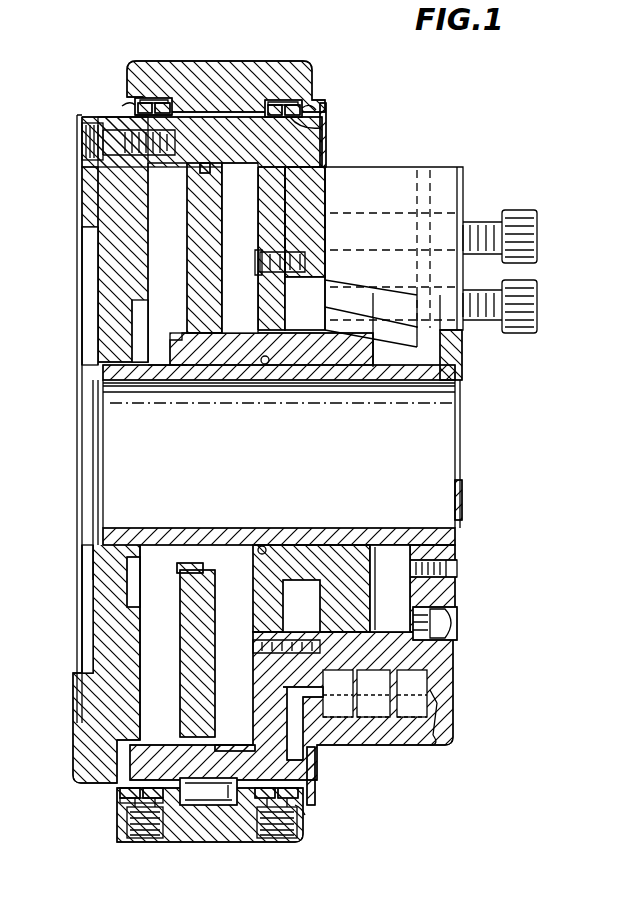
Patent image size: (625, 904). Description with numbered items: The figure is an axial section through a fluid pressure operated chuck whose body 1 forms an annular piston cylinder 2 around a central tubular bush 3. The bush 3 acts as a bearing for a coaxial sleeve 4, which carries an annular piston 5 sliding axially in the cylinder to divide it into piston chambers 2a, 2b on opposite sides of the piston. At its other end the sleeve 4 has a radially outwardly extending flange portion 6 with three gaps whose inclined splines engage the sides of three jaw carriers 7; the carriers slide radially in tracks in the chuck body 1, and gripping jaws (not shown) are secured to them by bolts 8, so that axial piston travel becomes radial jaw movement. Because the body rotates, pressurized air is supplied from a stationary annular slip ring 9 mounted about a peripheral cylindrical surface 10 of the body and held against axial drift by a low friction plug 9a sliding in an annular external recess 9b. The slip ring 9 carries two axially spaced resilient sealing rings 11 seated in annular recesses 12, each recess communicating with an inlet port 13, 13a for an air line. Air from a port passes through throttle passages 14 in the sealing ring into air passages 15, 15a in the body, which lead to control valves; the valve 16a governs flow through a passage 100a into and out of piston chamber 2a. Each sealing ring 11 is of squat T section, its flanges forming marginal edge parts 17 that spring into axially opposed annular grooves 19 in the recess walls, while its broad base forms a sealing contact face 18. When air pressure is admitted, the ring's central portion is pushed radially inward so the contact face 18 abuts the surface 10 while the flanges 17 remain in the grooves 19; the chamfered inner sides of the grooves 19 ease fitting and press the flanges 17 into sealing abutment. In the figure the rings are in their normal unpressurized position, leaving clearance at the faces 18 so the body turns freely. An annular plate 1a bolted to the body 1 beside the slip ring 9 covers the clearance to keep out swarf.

The chuck body 1 is at (110, 660).
The annular plate 1a is at (326, 124).
The annular piston cylinder 2 is at (150, 180).
The piston chamber 2a is at (155, 278).
The piston chamber 2b is at (240, 300).
The central tubular bush 3 is at (158, 385).
The coaxial sleeve 4 is at (220, 385).
The annular piston 5 is at (186, 237).
The flange portion 6 is at (355, 588).
The jaw carrier 7 is at (388, 185).
The bolts 8 is at (495, 318).
The slip ring 9 is at (195, 70).
The low friction plug 9a is at (210, 800).
The annular external recess 9b is at (226, 160).
The peripheral cylindrical surface 10 is at (78, 117).
The sealing ring 11 is at (140, 100).
The annular recess 12 is at (160, 102).
The inlet port 13 is at (148, 836).
The inlet port 13a is at (275, 836).
The throttle passages 14 is at (150, 100).
The air passage 15 is at (130, 790).
The air passage 15a is at (250, 745).
The control valve 16a is at (420, 715).
The marginal edge parts 17 is at (210, 98).
The sealing contact face 18 is at (297, 118).
The annular grooves 19 is at (125, 107).
The passage 100a is at (300, 690).